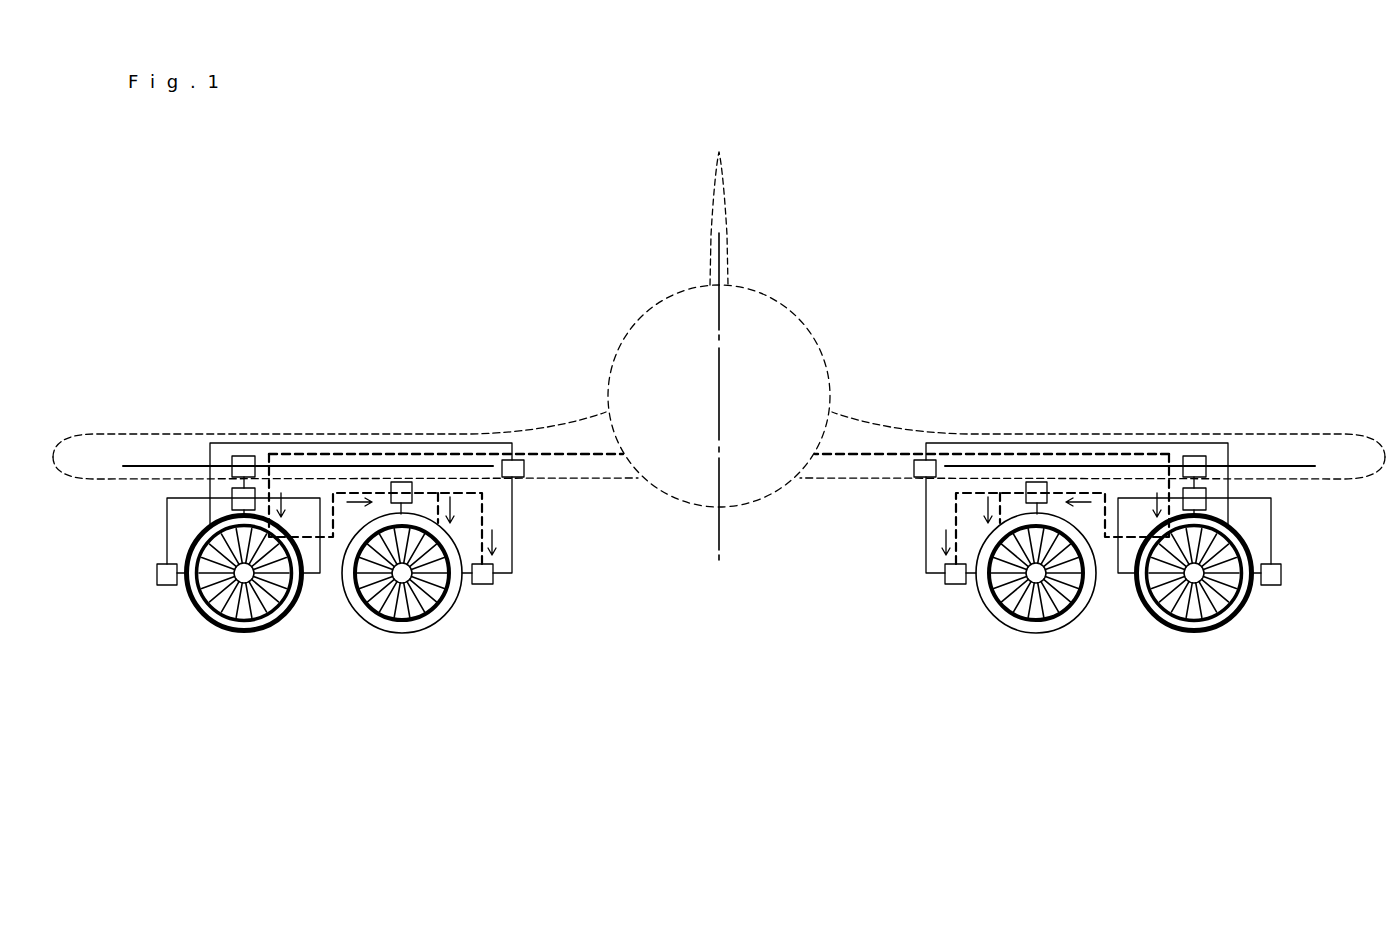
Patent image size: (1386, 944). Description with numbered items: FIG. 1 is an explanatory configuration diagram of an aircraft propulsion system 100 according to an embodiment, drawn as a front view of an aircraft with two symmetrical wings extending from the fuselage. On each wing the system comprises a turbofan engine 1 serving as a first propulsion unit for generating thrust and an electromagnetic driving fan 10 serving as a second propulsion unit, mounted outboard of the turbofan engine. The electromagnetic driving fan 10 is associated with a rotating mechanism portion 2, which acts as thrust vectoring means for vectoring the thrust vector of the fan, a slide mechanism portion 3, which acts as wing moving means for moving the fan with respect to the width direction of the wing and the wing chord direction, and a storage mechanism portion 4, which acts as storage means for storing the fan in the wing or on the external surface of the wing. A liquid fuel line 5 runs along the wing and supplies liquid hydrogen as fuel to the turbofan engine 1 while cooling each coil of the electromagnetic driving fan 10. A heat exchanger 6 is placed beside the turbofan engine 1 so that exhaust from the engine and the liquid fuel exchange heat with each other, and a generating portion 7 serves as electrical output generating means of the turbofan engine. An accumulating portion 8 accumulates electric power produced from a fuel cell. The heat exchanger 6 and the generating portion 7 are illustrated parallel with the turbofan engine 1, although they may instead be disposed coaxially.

The aircraft propulsion system 100 is at (685, 122).
The turbofan engine 1 is at (397, 633).
The electromagnetic driving fan 10 is at (230, 633).
The rotating mechanism portion 2 is at (157, 575).
The slide mechanism portion 3 is at (244, 456).
The storage mechanism portion 4 is at (255, 497).
The liquid fuel line 5 is at (577, 457).
The heat exchanger 6 is at (412, 490).
The generating portion 7 is at (483, 584).
The accumulating portion 8 is at (513, 477).